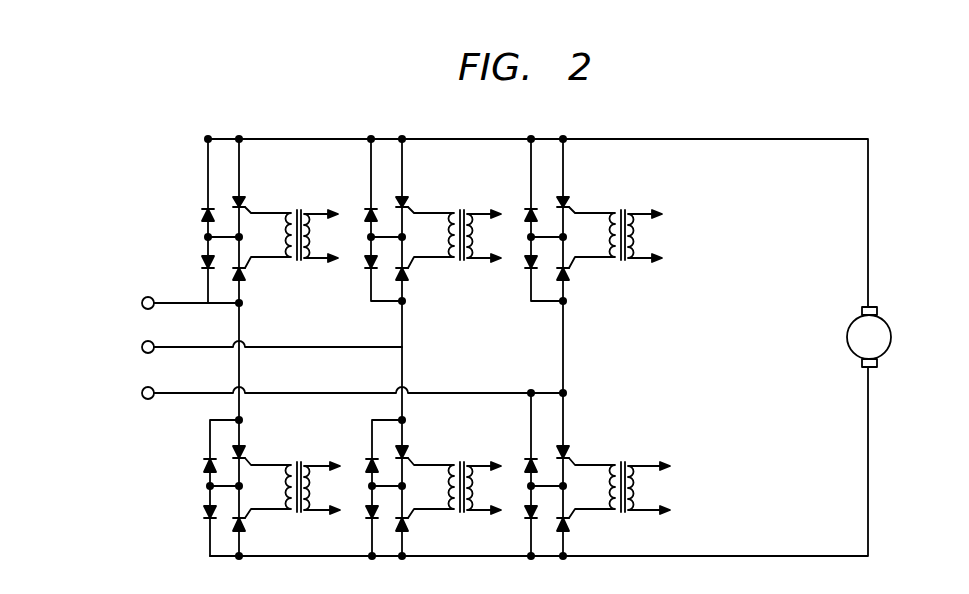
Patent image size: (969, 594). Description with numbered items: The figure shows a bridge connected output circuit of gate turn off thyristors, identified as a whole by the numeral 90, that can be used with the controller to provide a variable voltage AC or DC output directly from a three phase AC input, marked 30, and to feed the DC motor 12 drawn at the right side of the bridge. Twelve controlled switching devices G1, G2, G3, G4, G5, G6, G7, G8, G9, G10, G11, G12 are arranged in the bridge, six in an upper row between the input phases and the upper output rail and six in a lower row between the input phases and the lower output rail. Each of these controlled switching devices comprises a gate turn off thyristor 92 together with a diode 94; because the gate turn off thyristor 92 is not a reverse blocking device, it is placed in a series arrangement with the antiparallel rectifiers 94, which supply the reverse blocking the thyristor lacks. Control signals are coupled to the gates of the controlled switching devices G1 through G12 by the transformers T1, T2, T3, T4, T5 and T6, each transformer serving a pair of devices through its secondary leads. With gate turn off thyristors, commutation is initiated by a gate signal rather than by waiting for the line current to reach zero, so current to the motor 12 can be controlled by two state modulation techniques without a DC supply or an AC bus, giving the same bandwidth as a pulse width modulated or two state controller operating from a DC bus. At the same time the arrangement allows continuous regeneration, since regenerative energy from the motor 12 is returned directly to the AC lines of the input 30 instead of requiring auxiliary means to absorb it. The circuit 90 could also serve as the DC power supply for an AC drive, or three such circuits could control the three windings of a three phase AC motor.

The motor 12 is at (848, 331).
The three-phase AC input 30 is at (290, 337).
The thyristor bridge power converter circuit 90 is at (682, 366).
The gate turn off thyristor 92 is at (262, 293).
The antiparallel rectifiers 94 is at (203, 215).
The controlled switching device G1 is at (257, 192).
The controlled switching device G2 is at (259, 277).
The controlled switching device G3 is at (419, 191).
The controlled switching device G4 is at (424, 276).
The controlled switching device G5 is at (583, 191).
The controlled switching device G6 is at (585, 276).
The controlled switching device G7 is at (259, 446).
The controlled switching device G8 is at (262, 528).
The controlled switching device G9 is at (422, 446).
The controlled switching device G10 is at (429, 528).
The controlled switching device G11 is at (588, 446).
The controlled switching device G12 is at (591, 528).
The transformer T1 is at (306, 211).
The transformer T2 is at (306, 463).
The transformer T3 is at (458, 212).
The transformer T4 is at (458, 463).
The transformer T5 is at (621, 215).
The transformer T6 is at (632, 463).